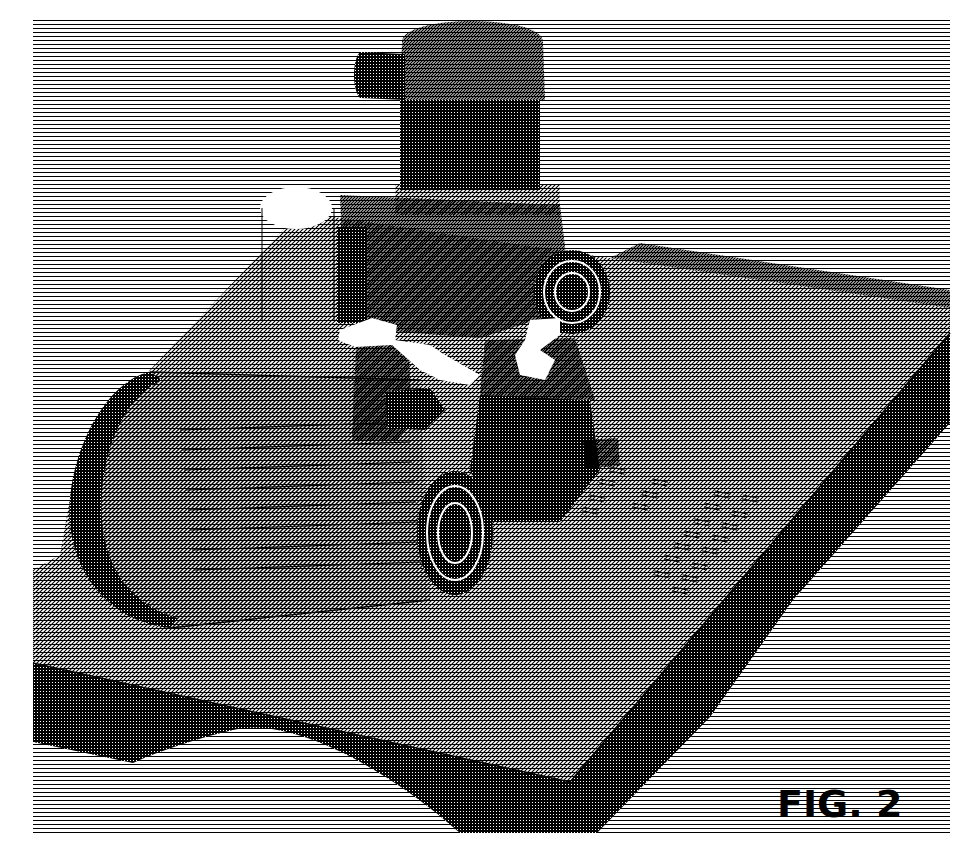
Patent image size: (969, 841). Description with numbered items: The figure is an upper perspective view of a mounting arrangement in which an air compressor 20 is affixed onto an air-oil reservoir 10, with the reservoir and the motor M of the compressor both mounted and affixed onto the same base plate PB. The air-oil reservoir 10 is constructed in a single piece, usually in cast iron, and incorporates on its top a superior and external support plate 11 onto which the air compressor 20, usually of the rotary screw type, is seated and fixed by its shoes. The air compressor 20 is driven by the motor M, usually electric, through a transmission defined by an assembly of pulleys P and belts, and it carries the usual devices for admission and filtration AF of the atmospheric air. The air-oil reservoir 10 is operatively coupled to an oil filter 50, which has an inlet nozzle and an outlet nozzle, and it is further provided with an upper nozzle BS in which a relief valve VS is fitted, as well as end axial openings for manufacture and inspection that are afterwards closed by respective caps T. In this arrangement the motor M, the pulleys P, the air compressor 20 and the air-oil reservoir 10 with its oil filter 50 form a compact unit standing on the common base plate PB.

The air-oil reservoir 10 is at (592, 400).
The superior and external support plate 11 is at (568, 347).
The air compressor 20 is at (383, 236).
The oil filter 50 is at (255, 240).
The devices for admission and filtration of atmospheric air AF is at (547, 100).
The pulleys P is at (602, 254).
The base plate PB is at (812, 352).
The motor M is at (150, 417).
The relief valve VS is at (393, 377).
The upper nozzle BS is at (383, 400).
The caps T is at (600, 450).